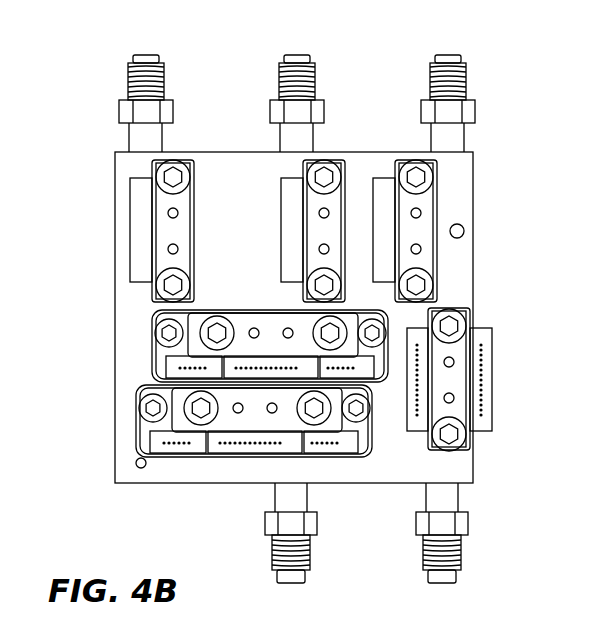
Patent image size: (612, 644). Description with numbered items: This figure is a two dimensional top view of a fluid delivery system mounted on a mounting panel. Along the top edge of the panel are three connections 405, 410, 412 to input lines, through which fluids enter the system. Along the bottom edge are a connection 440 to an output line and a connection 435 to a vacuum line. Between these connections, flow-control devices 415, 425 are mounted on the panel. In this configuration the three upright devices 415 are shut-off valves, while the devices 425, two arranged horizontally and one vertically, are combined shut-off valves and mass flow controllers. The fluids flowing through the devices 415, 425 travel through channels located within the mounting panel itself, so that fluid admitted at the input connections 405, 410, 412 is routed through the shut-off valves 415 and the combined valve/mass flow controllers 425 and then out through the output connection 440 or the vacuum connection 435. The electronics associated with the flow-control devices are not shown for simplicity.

The connection to input line 405 is at (466, 78).
The connection to input line 410 is at (315, 82).
The connection to input line 412 is at (128, 72).
The flow-control device 415 is at (324, 160).
The flow-control device 425 is at (136, 404).
The connection to vacuum line 435 is at (462, 552).
The connection to output line 440 is at (310, 553).